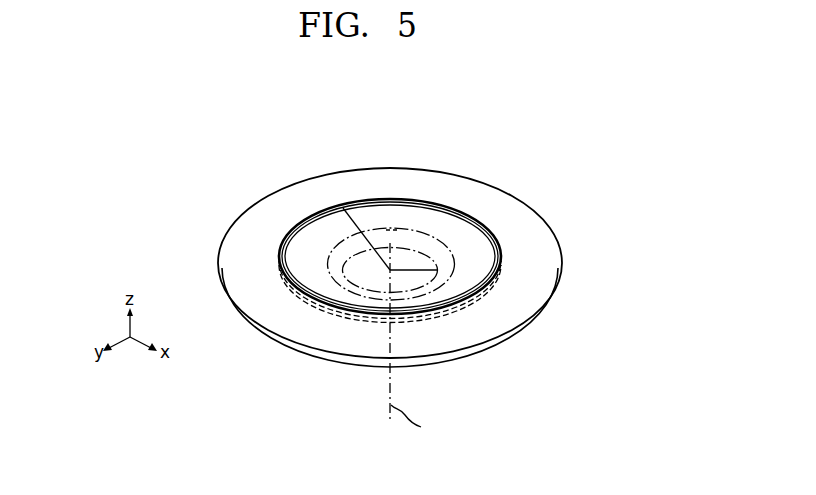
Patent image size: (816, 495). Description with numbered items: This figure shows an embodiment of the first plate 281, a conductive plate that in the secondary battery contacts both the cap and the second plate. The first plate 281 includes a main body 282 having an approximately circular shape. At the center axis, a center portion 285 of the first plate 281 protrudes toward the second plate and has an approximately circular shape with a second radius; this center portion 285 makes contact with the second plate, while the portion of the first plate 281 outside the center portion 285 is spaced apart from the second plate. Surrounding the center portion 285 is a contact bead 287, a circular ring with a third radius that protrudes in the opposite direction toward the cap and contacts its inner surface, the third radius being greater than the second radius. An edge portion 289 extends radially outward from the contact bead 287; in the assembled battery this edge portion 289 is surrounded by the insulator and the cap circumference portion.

The first plate 281 is at (484, 168).
The main body 282 is at (473, 265).
The center portion 285 is at (360, 279).
The contact bead 287 is at (479, 223).
The edge portion 289 is at (532, 295).